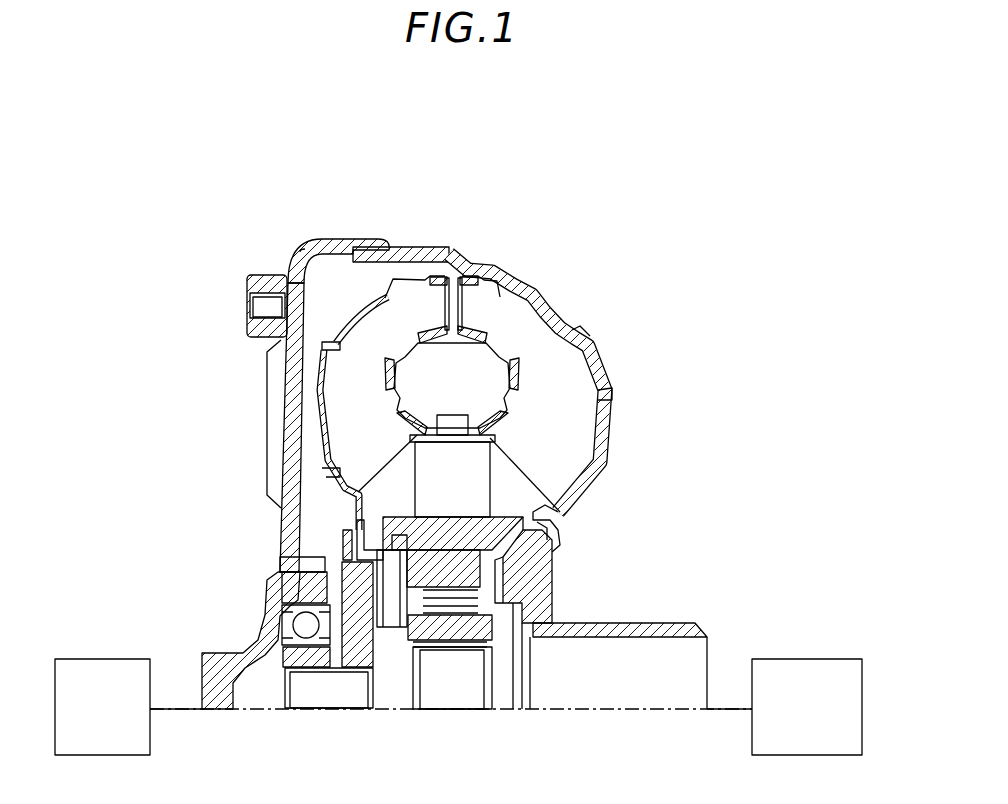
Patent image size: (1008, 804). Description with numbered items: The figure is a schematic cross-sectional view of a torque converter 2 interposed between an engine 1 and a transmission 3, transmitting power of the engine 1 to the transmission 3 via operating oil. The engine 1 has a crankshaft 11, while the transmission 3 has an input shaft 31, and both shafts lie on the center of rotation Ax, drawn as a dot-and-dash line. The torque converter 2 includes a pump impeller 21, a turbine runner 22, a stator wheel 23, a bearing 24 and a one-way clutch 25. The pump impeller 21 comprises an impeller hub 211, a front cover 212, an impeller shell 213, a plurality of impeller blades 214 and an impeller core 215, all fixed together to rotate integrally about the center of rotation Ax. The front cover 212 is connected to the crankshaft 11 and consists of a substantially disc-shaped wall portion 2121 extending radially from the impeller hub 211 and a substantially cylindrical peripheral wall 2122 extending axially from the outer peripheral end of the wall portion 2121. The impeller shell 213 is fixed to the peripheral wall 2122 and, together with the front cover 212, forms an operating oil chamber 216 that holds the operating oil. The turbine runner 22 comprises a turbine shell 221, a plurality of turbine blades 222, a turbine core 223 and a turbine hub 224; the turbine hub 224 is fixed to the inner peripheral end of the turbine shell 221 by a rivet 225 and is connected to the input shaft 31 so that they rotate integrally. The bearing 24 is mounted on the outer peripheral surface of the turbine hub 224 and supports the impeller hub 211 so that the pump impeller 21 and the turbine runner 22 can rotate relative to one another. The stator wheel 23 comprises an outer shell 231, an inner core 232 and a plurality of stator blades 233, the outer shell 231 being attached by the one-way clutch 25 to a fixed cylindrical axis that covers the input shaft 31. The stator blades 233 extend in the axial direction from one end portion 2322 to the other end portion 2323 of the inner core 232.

The engine 1 is at (93, 659).
The crankshaft 11 is at (165, 711).
The torque converter 2 is at (566, 212).
The pump impeller 21 is at (417, 435).
The impeller hub 211 is at (224, 662).
The front cover 212 is at (298, 422).
The wall portion 2121 is at (284, 299).
The peripheral wall 2122 is at (316, 232).
The impeller shell 213 is at (548, 307).
The impeller blades 214 is at (562, 358).
The impeller core 215 is at (523, 380).
The operating oil chamber 216 is at (316, 266).
The turbine runner 22 is at (355, 398).
The turbine shell 221 is at (324, 396).
The turbine blades 222 is at (330, 442).
The turbine core 223 is at (330, 347).
The turbine hub 224 is at (343, 600).
The rivet 225 is at (343, 536).
The stator wheel 23 is at (398, 447).
The outer shell 231 is at (364, 490).
The inner core 232 is at (500, 432).
The one end portion 2322 is at (396, 430).
The other end portion 2323 is at (578, 468).
The stator blades 233 is at (428, 473).
The bearing 24 is at (318, 642).
The one-way clutch 25 is at (447, 602).
The transmission 3 is at (803, 659).
The input shaft 31 is at (720, 711).
The center of rotation Ax is at (618, 711).